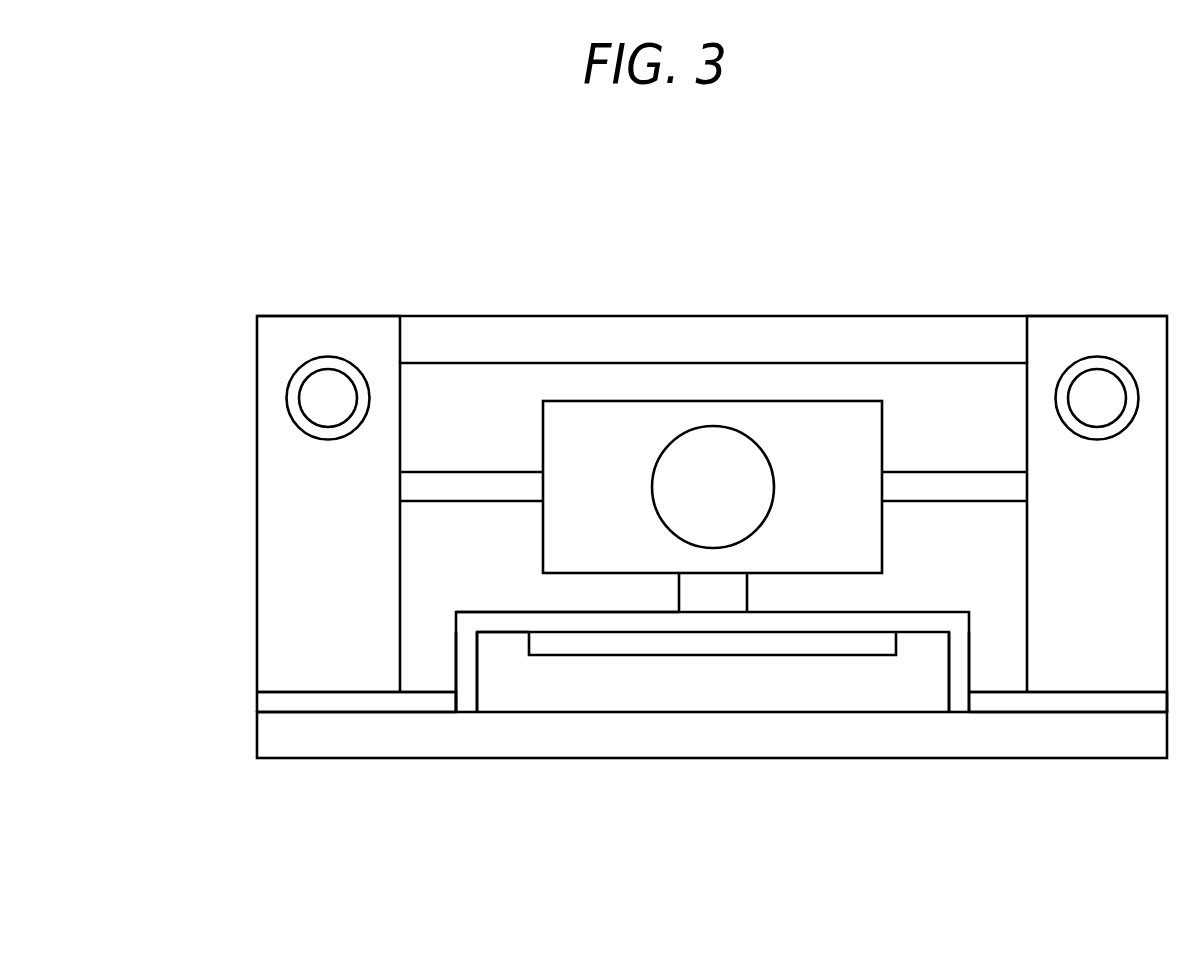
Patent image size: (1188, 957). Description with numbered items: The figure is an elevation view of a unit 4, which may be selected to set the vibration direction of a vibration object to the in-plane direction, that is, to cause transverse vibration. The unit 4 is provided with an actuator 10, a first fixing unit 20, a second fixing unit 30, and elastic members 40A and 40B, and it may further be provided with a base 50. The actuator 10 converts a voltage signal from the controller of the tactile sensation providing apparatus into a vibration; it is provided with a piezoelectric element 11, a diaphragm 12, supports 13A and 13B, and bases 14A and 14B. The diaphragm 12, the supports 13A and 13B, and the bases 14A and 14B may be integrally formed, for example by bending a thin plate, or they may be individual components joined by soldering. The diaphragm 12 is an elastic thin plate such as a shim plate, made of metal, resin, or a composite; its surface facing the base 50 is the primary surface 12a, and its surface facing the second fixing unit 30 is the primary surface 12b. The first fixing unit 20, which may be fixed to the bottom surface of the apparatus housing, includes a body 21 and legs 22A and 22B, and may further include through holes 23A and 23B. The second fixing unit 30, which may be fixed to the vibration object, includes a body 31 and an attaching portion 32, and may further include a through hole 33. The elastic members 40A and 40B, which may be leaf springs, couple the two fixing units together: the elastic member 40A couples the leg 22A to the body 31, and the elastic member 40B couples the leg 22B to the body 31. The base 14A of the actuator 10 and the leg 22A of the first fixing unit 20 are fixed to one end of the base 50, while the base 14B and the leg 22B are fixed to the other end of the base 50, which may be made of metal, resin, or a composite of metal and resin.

The unit 4 is at (214, 258).
The actuator 10 is at (1052, 835).
The piezoelectric element 11 is at (720, 655).
The diaphragm 12 is at (838, 620).
The primary surface 12a is at (500, 632).
The primary surface 12b is at (498, 610).
The support 13A is at (470, 670).
The support 13B is at (955, 657).
The base 14A is at (377, 702).
The base 14B is at (1003, 703).
The first fixing unit 20 is at (433, 253).
The body 21 is at (994, 339).
The leg 22A is at (362, 455).
The leg 22B is at (1044, 417).
The through hole 23A is at (327, 385).
The through hole 23B is at (1099, 387).
The second fixing unit 30 is at (790, 253).
The body 31 is at (775, 418).
The attaching portion 32 is at (710, 588).
The through hole 33 is at (665, 452).
The elastic member 40A is at (470, 485).
The elastic member 40B is at (955, 485).
The base 50 is at (285, 735).